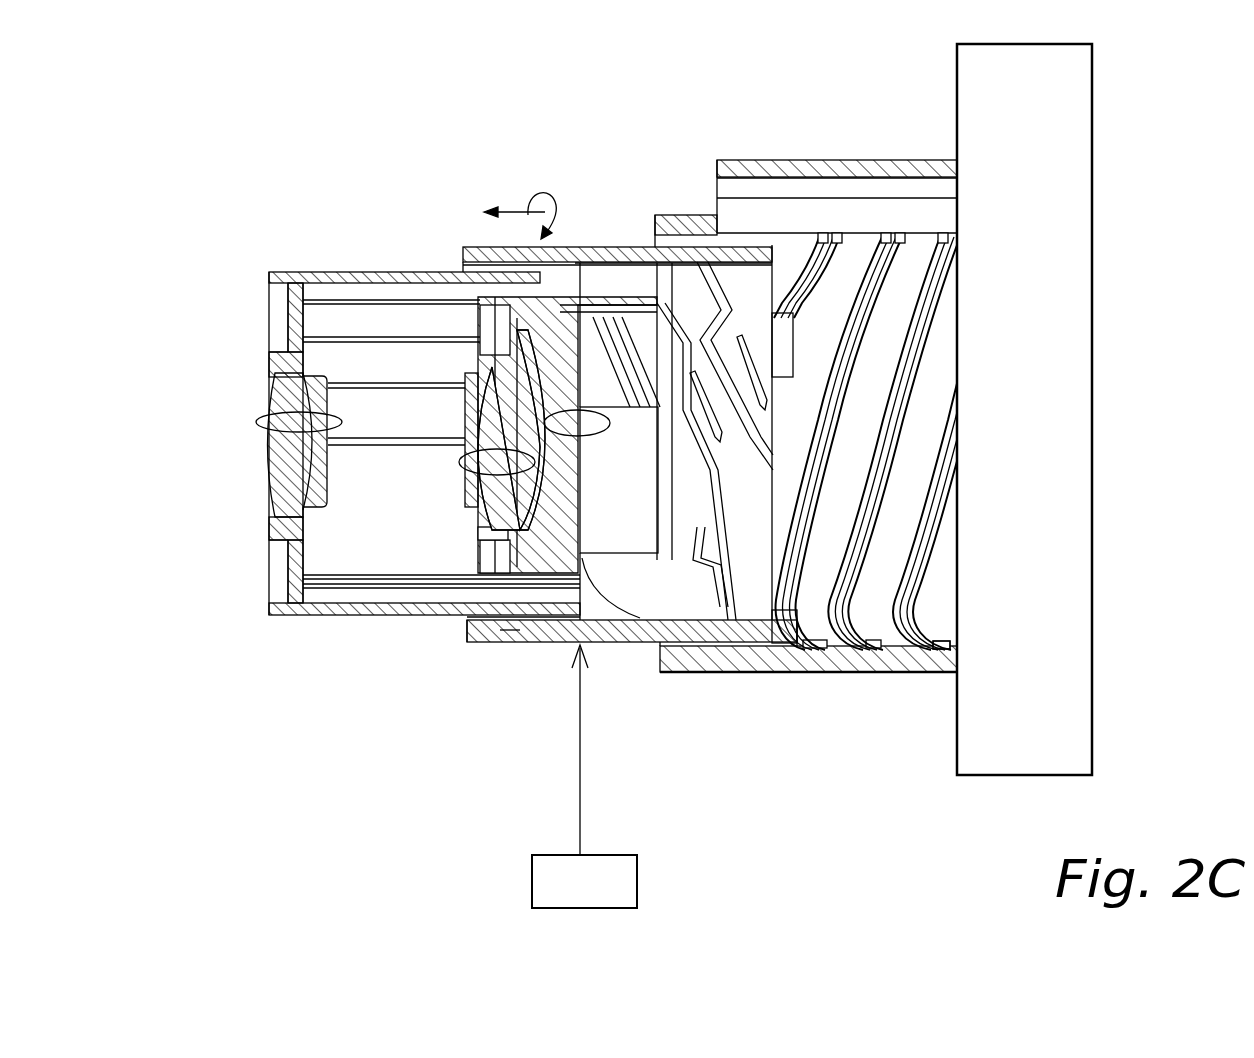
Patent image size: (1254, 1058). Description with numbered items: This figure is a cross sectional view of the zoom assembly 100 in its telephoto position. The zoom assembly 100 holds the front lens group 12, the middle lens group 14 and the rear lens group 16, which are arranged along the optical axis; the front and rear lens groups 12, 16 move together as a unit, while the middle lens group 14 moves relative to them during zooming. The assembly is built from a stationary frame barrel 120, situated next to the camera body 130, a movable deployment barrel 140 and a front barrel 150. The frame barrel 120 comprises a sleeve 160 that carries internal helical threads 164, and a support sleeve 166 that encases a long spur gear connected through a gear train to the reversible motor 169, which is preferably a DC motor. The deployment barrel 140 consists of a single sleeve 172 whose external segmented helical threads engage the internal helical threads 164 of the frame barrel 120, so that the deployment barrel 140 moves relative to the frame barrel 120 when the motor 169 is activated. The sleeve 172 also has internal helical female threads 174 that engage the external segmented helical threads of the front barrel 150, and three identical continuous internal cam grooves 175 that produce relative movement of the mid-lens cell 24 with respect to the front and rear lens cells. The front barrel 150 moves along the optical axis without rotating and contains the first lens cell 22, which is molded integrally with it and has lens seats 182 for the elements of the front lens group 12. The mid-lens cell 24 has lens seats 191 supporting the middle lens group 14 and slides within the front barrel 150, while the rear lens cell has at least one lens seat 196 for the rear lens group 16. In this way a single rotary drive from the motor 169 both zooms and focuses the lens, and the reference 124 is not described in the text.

The zoom assembly 100 is at (594, 127).
The support sleeve 166 is at (880, 190).
The camera body 130 is at (1062, 93).
The deployment barrel 140 is at (481, 247).
The rear lens group 16 is at (592, 425).
The first lens cell 22 is at (280, 344).
The internal helical threads 164 is at (933, 306).
The front lens group 12 is at (256, 425).
The lens seats 182 is at (283, 520).
The lens seats 191 is at (468, 507).
The mid-lens cell 24 is at (490, 532).
The lens seat 196 is at (537, 590).
The middle lens group 14 is at (533, 613).
The front barrel 150 is at (315, 617).
The sleeve 172 is at (467, 630).
The internal helical female threads 174 is at (500, 637).
The internal cam grooves 175 is at (655, 652).
The sleeve 160 is at (873, 672).
The frame barrel 120 is at (937, 673).
The tab 124 is at (953, 647).
The reversible motor 169 is at (584, 776).